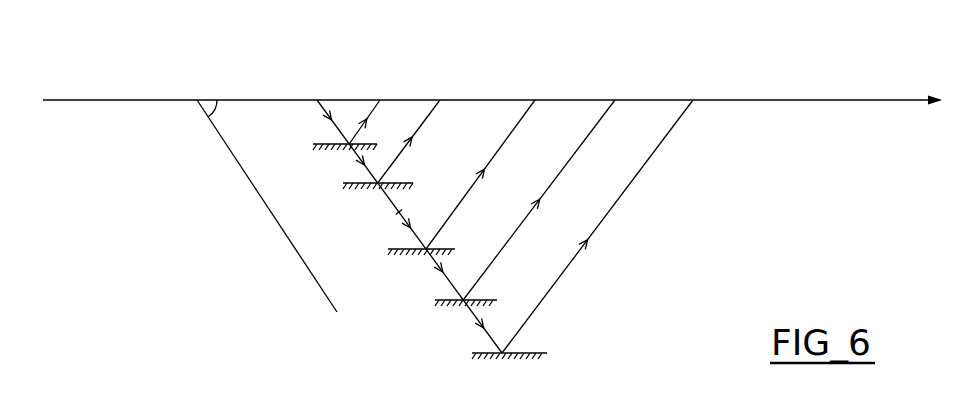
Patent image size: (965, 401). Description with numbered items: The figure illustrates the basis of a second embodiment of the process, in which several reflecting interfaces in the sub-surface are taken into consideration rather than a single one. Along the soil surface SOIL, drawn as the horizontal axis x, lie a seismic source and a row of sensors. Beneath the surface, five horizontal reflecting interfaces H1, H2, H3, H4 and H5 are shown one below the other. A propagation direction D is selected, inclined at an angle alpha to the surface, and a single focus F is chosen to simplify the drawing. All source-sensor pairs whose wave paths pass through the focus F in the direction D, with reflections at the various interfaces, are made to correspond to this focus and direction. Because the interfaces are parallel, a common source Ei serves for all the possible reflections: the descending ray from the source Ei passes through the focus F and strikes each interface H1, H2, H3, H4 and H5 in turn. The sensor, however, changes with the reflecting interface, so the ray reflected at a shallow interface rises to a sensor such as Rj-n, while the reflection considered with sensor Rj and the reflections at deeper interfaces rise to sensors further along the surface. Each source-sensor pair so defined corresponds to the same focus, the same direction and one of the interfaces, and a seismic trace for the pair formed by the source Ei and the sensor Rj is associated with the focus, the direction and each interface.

The horizontal axis x is at (491, 87).
The soil surface SOIL is at (92, 120).
The propagation direction D is at (275, 222).
The angle of the propagation direction alpha is at (219, 111).
The source Ei is at (402, 215).
The sensor Rj-n is at (403, 130).
The sensor Rj is at (481, 163).
The reflecting interface H1 is at (320, 142).
The reflecting interface H2 is at (353, 185).
The focus F is at (395, 217).
The reflecting interface H3 is at (398, 248).
The reflecting interface H4 is at (440, 298).
The reflecting interface H5 is at (485, 353).